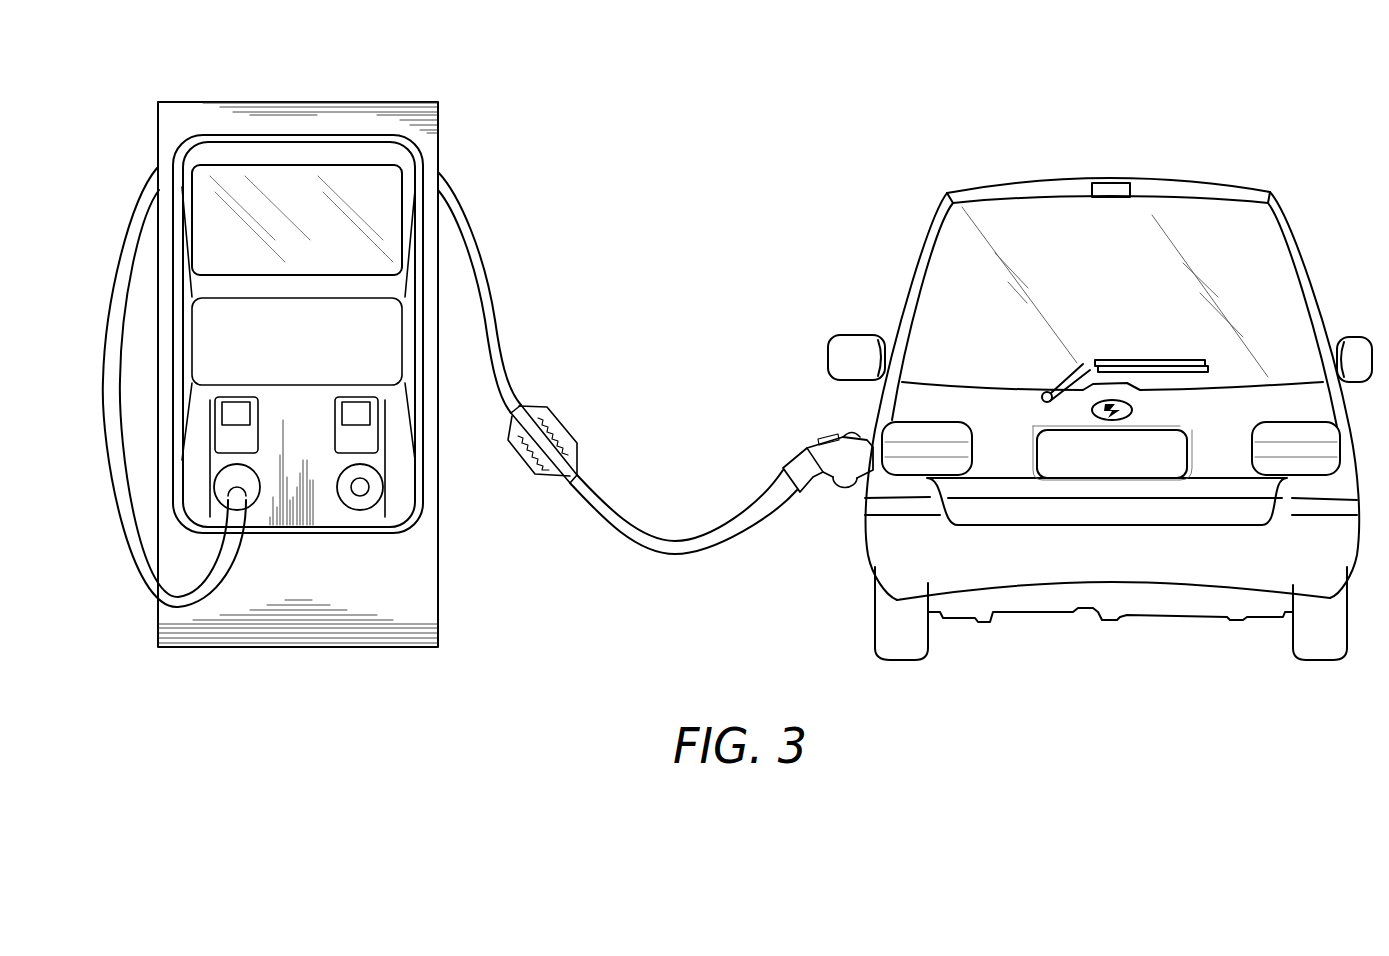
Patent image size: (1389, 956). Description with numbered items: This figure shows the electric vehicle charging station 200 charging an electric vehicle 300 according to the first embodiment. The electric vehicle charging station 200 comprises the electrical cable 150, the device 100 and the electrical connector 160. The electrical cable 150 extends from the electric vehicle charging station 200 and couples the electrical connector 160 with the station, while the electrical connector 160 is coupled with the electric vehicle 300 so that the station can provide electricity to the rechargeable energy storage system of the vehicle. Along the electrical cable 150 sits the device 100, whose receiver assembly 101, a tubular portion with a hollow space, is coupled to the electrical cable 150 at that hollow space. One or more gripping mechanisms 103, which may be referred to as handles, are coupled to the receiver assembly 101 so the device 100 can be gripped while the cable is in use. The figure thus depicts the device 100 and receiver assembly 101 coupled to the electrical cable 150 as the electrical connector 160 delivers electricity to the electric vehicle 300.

The electric vehicle charging station 200 is at (410, 84).
The electrical cable 150 is at (512, 304).
The device 100 is at (593, 411).
The gripping mechanisms 103 is at (538, 412).
The receiver assembly 101 is at (577, 473).
The electrical connector 160 is at (808, 470).
The electric vehicle 300 is at (1136, 692).